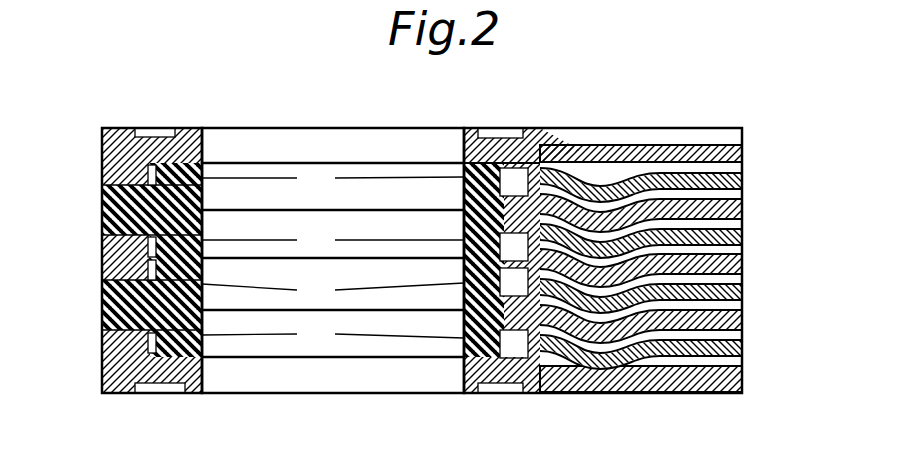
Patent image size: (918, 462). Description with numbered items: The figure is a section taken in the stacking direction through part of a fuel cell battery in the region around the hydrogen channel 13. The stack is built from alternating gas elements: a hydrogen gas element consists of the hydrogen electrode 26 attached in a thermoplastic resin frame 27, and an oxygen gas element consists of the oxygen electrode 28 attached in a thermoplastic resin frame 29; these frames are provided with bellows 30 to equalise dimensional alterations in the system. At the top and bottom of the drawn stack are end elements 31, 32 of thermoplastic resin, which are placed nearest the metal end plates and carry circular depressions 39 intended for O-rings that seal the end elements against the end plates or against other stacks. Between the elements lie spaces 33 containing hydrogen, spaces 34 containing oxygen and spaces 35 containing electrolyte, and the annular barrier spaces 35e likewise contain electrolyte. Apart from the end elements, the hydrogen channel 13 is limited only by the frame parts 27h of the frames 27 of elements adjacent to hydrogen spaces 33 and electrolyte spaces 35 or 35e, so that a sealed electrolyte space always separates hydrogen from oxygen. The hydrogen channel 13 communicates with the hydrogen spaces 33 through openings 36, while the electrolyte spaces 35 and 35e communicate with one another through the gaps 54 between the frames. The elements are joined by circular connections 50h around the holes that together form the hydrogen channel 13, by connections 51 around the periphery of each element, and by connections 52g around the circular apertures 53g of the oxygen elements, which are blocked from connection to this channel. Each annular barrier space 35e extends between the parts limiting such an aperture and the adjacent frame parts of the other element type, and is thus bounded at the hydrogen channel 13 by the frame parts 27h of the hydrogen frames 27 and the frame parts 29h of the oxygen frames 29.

The hydrogen channel 13 is at (335, 150).
The hydrogen electrode 26 is at (718, 178).
The thermoplastic resin frame 27 is at (110, 292).
The frame parts 27h is at (205, 165).
The oxygen electrode 28 is at (745, 160).
The thermoplastic resin frame 29 is at (640, 175).
The frame parts 29h is at (104, 150).
The bellows 30 is at (612, 240).
The end element 31 is at (200, 390).
The end element 32 is at (106, 132).
The space containing hydrogen 33 is at (738, 210).
The space containing oxygen 34 is at (740, 152).
The space containing electrolyte 35 is at (738, 182).
The barrier space 35e is at (162, 146).
The openings 36 is at (462, 215).
The circular depressions 39 is at (150, 130).
The circular connections 50h is at (206, 163).
The connections 51 is at (110, 190).
The connections 52g is at (333, 283).
The circular apertures 53g is at (333, 250).
The gaps 54 is at (675, 185).